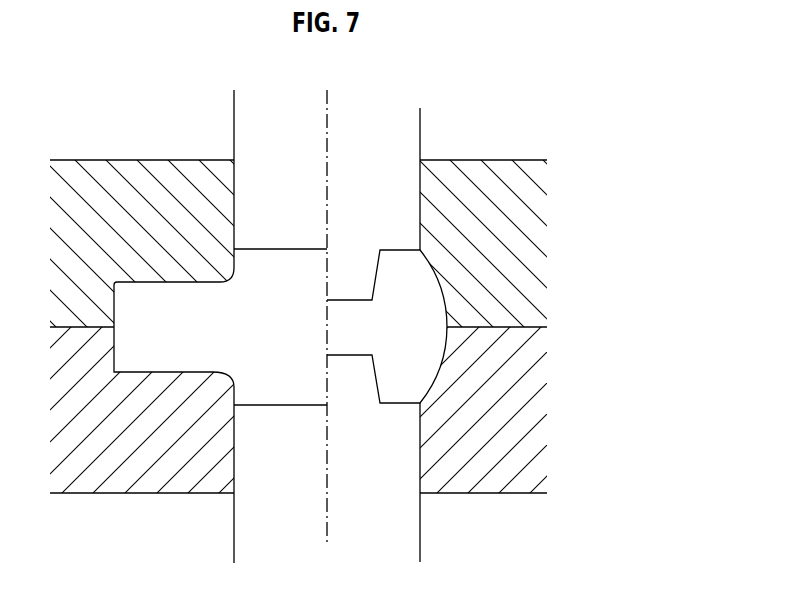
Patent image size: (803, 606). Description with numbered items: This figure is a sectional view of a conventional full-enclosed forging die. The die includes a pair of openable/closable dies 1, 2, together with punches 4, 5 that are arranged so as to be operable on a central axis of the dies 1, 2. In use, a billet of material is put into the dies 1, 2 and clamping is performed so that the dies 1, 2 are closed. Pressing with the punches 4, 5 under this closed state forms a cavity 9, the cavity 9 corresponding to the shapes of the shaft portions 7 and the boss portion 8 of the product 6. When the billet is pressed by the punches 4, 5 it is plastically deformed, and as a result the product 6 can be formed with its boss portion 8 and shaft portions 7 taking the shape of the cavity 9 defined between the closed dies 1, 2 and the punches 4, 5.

The die 1 is at (503, 159).
The die 2 is at (484, 496).
The punch 4 is at (402, 128).
The punch 5 is at (257, 517).
The product 6 is at (395, 405).
The shaft portion 7 is at (147, 310).
The boss portion 8 is at (293, 387).
The cavity 9 is at (236, 386).